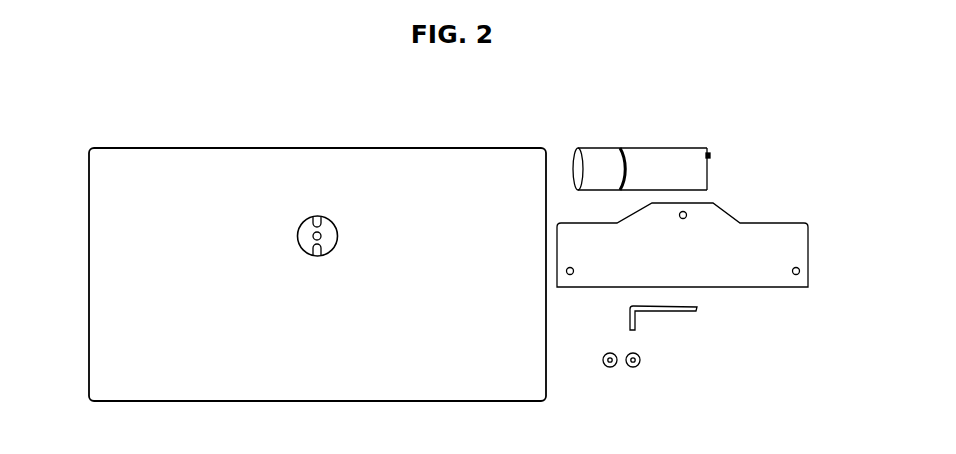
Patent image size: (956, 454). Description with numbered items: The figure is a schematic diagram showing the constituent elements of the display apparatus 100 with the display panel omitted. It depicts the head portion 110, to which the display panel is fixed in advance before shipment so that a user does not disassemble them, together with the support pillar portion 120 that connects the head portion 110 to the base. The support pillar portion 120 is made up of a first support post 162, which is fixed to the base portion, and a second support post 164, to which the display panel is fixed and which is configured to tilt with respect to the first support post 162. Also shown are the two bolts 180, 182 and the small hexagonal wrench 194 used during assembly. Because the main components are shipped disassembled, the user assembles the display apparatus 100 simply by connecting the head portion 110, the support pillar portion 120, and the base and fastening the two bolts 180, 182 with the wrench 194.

The display apparatus 100 is at (376, 166).
The head portion 110 is at (773, 227).
The support pillar portion 120 is at (637, 121).
The first support post 162 is at (683, 150).
The second support post 164 is at (607, 150).
The bolt 180 is at (607, 368).
The bolt 182 is at (636, 368).
The L-shaped key 194 is at (676, 311).